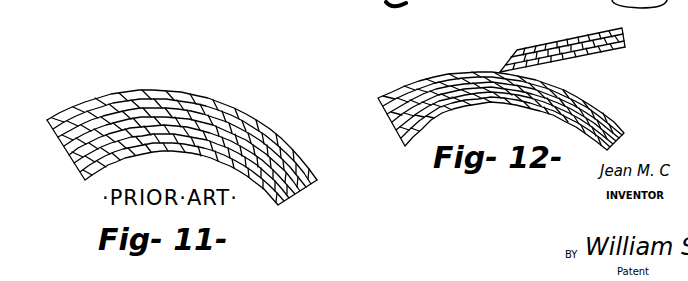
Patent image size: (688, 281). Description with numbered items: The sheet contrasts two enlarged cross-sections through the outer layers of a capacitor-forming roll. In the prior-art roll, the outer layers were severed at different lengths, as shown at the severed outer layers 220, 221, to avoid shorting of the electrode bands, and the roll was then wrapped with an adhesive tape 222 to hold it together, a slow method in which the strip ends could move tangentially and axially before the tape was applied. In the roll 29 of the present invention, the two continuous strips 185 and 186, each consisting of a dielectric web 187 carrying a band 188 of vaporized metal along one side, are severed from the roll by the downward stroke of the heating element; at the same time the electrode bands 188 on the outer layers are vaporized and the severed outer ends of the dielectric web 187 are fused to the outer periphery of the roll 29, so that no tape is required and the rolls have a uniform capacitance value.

In FIG. 12, the roll 29 is at (390, 79).
In FIG. 12, the strip 185 is at (582, 28).
In FIG. 12, the strip 186 is at (567, 66).
In FIG. 12, the dielectric web 187 is at (477, 73).
In FIG. 12, the band of vaporized metal 188 is at (420, 82).
In FIG. 11, the severed outer layer 220 is at (193, 105).
In FIG. 11, the severed outer layer 221 is at (107, 107).
In FIG. 11, the adhesive tape 222 is at (266, 110).